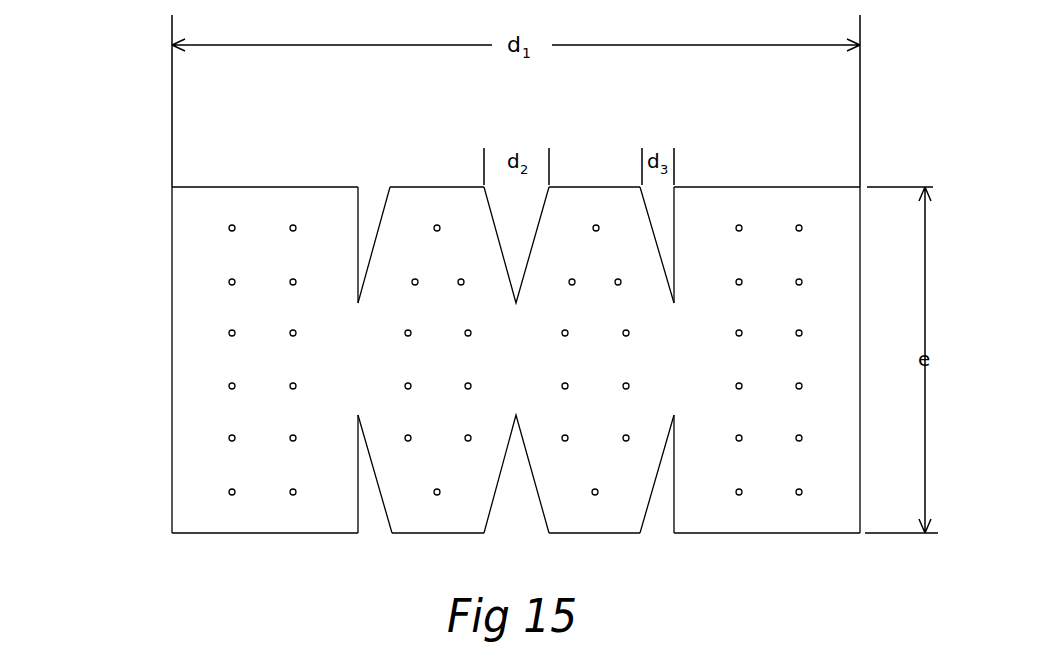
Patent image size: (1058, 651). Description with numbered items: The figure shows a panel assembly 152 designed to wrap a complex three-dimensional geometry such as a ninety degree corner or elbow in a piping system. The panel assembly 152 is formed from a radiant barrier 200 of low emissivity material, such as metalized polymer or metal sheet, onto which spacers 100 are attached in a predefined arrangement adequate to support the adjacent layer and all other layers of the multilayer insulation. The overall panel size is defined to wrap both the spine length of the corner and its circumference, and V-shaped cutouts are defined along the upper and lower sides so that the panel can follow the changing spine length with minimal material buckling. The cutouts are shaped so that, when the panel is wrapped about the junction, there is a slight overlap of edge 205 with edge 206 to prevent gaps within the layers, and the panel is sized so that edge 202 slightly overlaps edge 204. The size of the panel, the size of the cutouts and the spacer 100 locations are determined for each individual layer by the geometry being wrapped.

The panel assembly 152 is at (499, 344).
The radiant barrier 200 is at (499, 344).
The spacer 100 is at (290, 492).
The edge 202 is at (807, 188).
The edge 204 is at (796, 533).
The cutout edge 205 is at (357, 227).
The cutout edge 206 is at (385, 200).